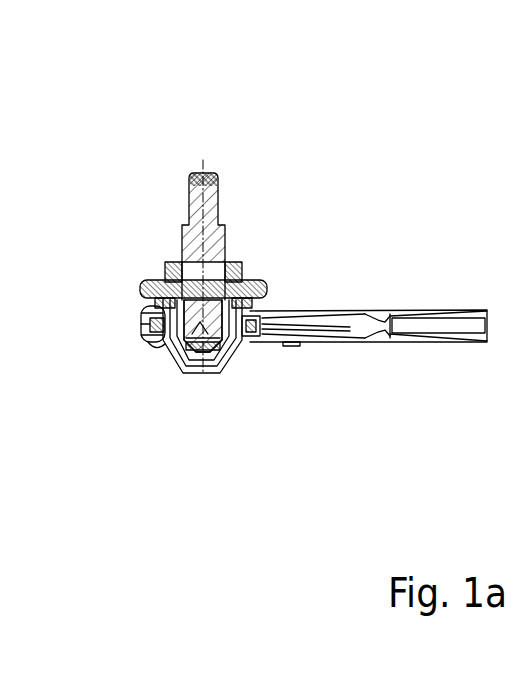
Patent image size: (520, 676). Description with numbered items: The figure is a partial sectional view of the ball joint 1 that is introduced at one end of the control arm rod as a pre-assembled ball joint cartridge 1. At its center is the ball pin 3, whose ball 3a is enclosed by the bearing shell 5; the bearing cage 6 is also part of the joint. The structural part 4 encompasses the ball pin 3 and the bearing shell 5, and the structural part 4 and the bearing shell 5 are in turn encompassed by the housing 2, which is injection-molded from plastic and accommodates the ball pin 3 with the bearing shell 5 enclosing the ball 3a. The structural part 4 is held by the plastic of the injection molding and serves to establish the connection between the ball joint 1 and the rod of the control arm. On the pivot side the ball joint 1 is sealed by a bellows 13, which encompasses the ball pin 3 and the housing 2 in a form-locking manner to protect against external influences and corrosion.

The ball joint 1 is at (269, 292).
The housing 2 is at (153, 318).
The ball pin 3 is at (183, 232).
The ball 3a is at (228, 362).
The structural part 4 is at (152, 347).
The bearing shell 5 is at (168, 362).
The bearing cage 6 is at (243, 350).
The bellows 13 is at (266, 283).